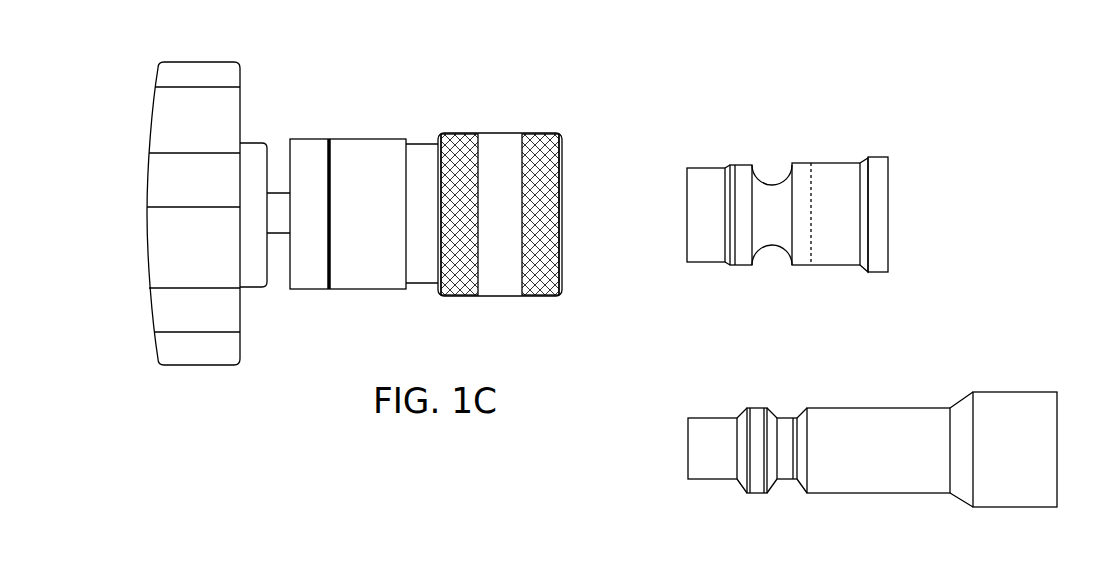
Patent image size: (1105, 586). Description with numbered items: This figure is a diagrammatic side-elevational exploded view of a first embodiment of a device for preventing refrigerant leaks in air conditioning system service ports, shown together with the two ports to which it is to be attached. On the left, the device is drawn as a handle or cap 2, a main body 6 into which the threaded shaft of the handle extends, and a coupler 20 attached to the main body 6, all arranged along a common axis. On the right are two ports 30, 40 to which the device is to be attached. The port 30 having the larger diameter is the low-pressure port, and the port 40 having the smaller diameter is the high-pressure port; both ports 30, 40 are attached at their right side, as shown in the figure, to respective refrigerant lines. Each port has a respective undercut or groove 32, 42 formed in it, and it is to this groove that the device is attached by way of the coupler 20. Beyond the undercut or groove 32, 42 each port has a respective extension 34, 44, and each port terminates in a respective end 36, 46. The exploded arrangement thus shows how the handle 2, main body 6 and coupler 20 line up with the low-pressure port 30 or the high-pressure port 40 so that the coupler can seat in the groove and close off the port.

The handle or cap 2 is at (152, 120).
The main body 6 is at (359, 137).
The coupler 20 is at (536, 134).
The port 30 is at (826, 163).
The undercut or groove 32 is at (772, 186).
The extension 34 is at (700, 168).
The end 36 is at (688, 225).
The port 40 is at (912, 408).
The undercut or groove 42 is at (787, 418).
The extension 44 is at (712, 418).
The end 46 is at (688, 444).